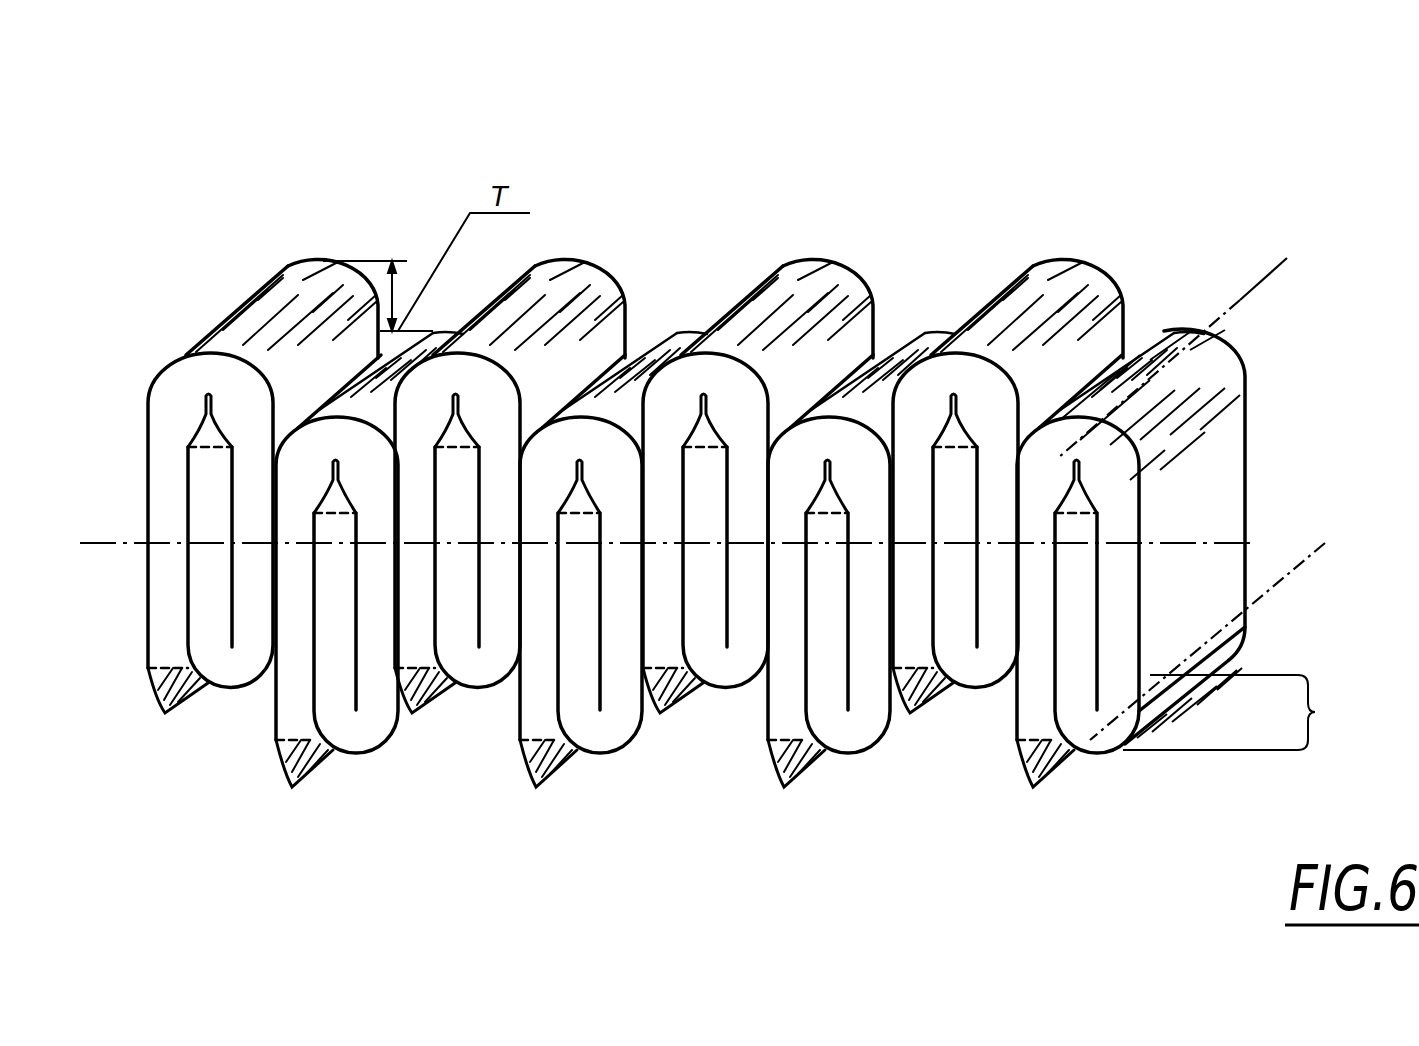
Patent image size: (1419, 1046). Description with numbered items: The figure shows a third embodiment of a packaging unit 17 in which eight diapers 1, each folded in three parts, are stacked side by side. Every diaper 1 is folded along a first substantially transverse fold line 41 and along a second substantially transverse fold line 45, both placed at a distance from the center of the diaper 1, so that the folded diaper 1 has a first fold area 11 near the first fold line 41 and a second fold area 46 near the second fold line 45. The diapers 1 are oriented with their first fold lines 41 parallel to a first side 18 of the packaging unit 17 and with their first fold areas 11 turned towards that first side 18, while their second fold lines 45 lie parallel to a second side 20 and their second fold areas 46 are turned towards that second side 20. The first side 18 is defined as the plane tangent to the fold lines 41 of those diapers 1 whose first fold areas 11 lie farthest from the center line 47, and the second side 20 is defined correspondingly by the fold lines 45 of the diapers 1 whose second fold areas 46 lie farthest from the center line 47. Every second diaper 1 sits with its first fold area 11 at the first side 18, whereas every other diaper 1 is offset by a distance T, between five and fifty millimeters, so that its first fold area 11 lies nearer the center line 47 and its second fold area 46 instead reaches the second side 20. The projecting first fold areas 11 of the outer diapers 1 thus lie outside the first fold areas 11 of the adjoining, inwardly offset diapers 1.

The diaper 1 is at (1247, 437).
The first fold area 11 is at (185, 352).
The packaging unit 17 is at (870, 198).
The first side 18 is at (600, 262).
The second side 20 is at (363, 753).
The first substantially transverse fold line 41 is at (1253, 287).
The second substantially transverse fold line 45 is at (1107, 737).
The second fold area 46 is at (1357, 718).
The center line 47 is at (1220, 542).